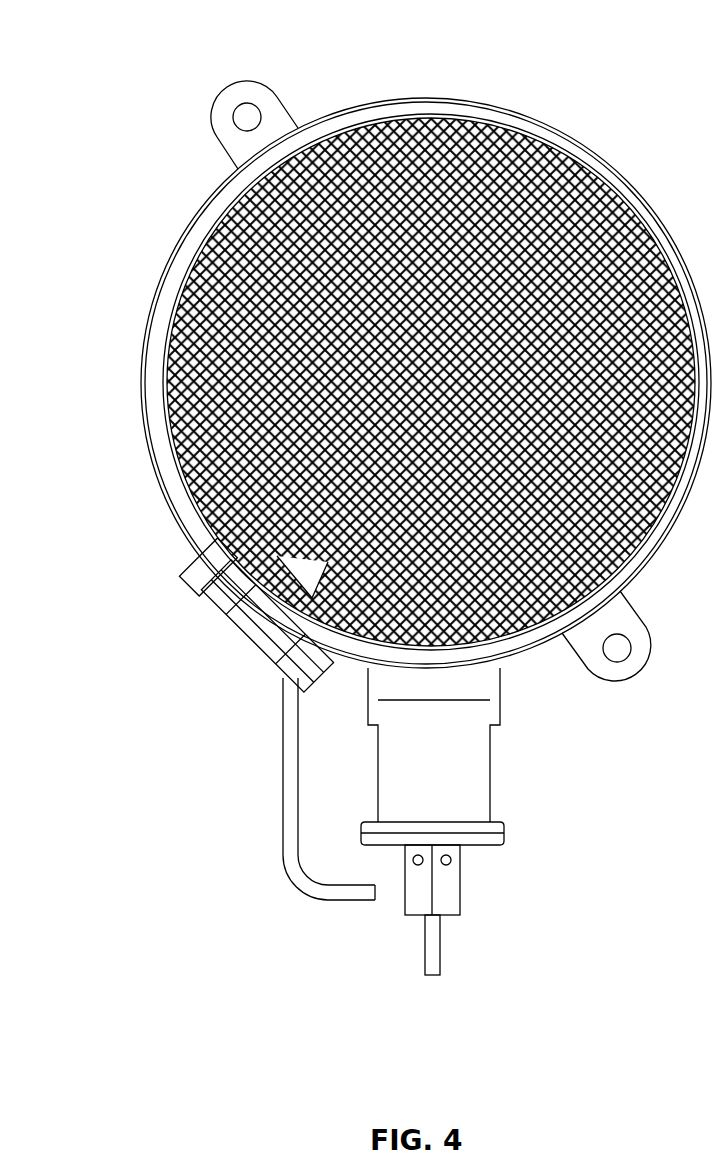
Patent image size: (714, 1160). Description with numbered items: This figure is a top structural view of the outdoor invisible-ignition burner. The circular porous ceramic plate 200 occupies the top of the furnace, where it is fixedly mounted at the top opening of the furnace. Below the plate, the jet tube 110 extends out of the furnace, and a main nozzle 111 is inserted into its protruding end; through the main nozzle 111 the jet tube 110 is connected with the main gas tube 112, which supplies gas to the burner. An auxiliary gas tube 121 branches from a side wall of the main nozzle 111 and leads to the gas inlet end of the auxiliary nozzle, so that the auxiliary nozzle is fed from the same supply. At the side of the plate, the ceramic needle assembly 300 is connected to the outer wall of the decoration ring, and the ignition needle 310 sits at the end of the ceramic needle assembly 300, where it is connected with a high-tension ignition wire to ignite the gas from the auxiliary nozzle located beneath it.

The porous ceramic plate 200 is at (541, 214).
The jet tube 110 is at (470, 705).
The main nozzle 111 is at (455, 900).
The main gas tube 112 is at (432, 958).
The auxiliary gas tube 121 is at (290, 855).
The ceramic needle assembly 300 is at (232, 643).
The ignition needle 310 is at (207, 583).